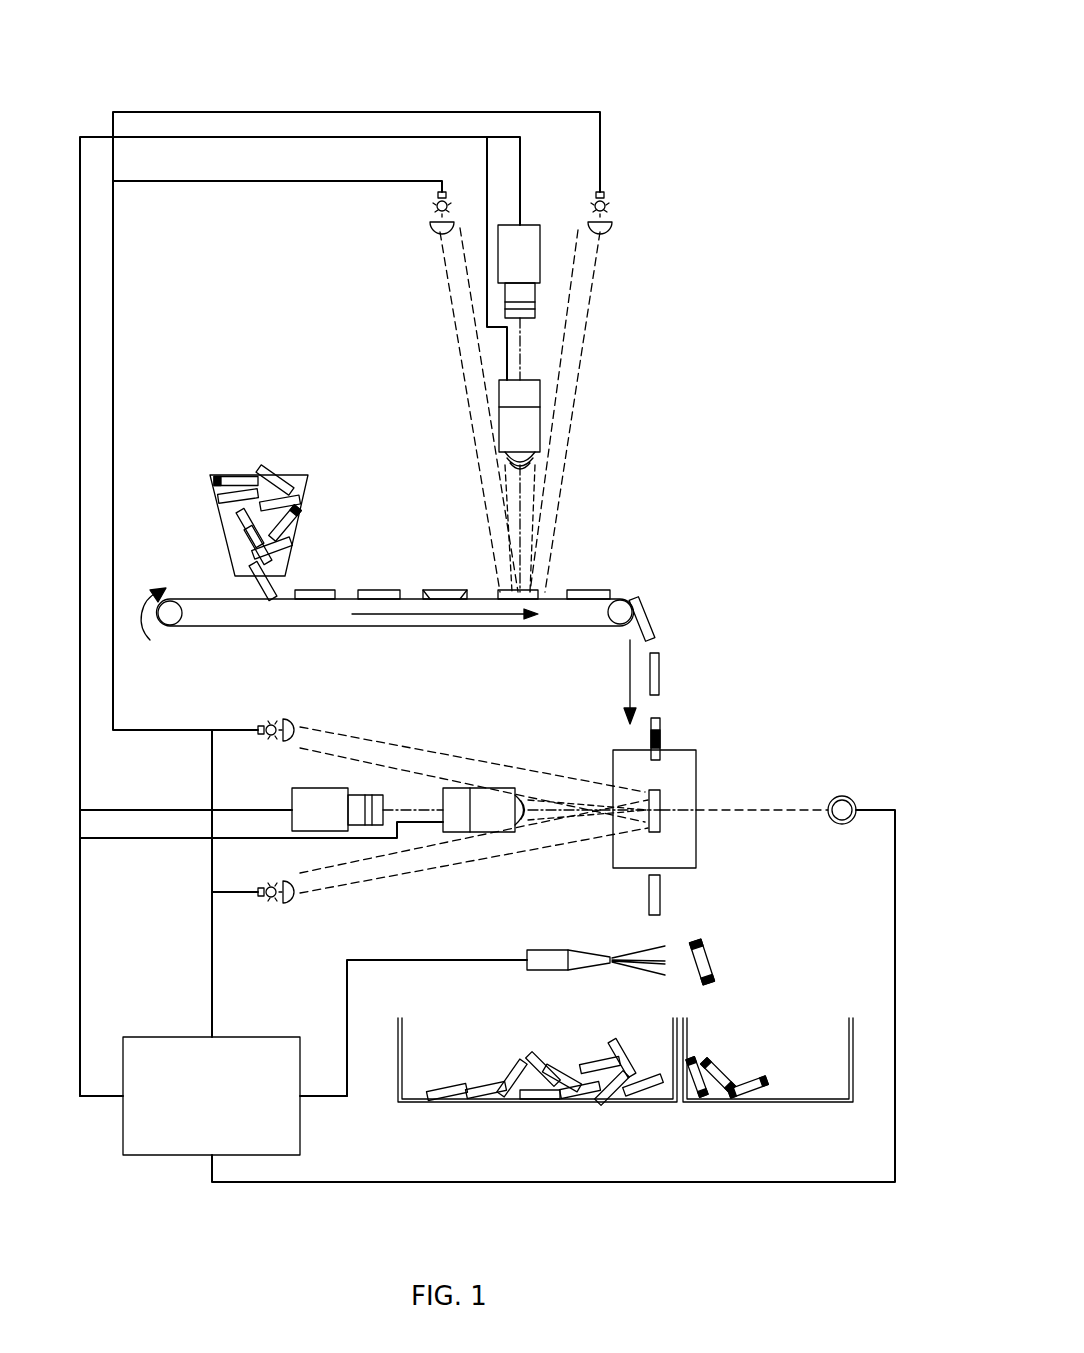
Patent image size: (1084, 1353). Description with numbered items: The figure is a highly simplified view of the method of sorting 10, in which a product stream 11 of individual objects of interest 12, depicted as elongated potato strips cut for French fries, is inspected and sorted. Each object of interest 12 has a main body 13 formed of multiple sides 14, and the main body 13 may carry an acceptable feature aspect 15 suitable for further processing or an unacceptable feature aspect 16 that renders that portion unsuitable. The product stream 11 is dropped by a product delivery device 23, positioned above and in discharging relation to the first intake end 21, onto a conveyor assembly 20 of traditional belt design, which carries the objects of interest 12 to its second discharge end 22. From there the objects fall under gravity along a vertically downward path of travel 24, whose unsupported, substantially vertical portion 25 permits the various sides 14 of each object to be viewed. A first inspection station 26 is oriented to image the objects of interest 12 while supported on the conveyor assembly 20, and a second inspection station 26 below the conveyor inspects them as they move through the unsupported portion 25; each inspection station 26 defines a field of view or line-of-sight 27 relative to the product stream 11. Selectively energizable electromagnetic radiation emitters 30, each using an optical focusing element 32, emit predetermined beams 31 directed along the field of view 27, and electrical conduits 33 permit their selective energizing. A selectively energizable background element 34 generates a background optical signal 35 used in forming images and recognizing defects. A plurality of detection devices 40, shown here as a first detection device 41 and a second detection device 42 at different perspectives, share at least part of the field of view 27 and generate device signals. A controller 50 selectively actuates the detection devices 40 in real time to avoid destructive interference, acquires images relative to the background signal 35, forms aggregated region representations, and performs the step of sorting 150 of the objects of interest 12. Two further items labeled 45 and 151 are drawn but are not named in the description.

The method of sorting 10 is at (796, 104).
The product stream 11 is at (257, 445).
The objects of interest 12 is at (438, 597).
The main body 13 is at (662, 668).
The sides 14 is at (645, 720).
The acceptable feature aspect 15 is at (662, 898).
The unacceptable feature aspect 16 is at (708, 982).
The conveyor assembly 20 is at (375, 636).
The first intake end 21 is at (207, 598).
The second discharge end 22 is at (619, 600).
The product delivery device 23 is at (214, 508).
The path of travel 24 is at (470, 622).
The unsupported path portion 25 is at (626, 680).
The inspection station 26 is at (565, 542).
The field of view 27 is at (485, 570).
The electromagnetic radiation emitters 30 is at (430, 206).
The beams 31 is at (462, 300).
The optical focusing element 32 is at (428, 228).
The electrical conduits 33 is at (330, 181).
The background element 34 is at (852, 798).
The background optical signal 35 is at (768, 808).
The detection devices 40 is at (520, 265).
The first detection device 41 is at (543, 415).
The second detection device 42 is at (510, 235).
The signal cable 45 is at (486, 168).
The controller 50 is at (211, 1096).
The step of sorting 150 is at (607, 928).
The marking laser 151 is at (458, 960).